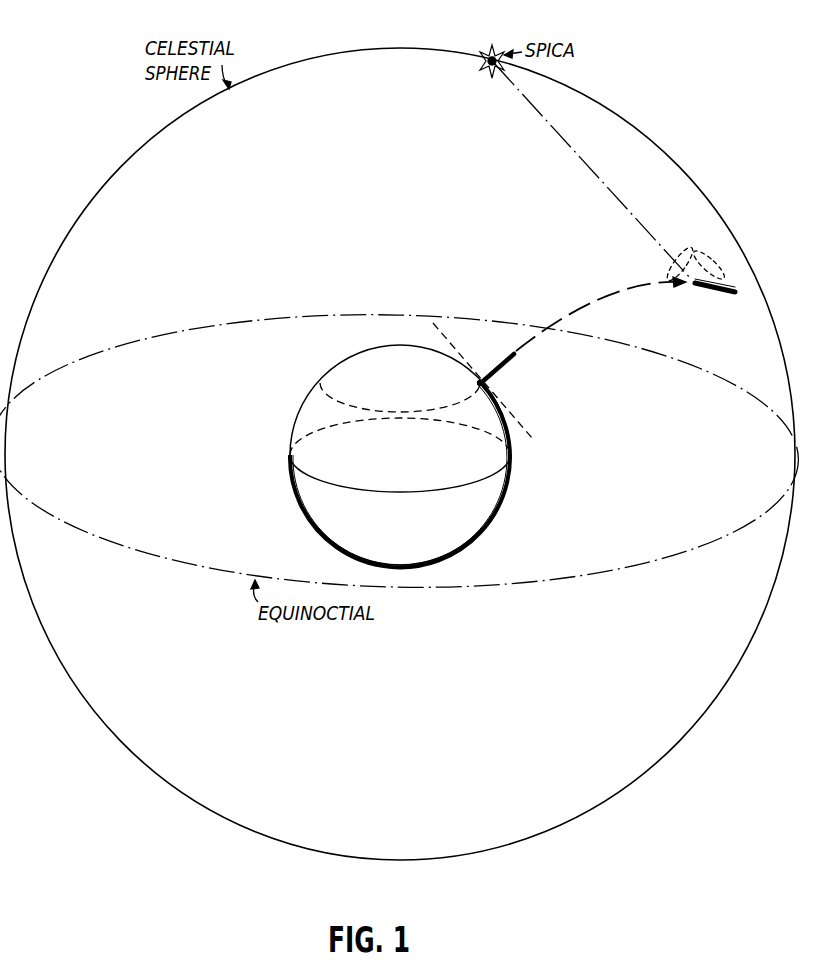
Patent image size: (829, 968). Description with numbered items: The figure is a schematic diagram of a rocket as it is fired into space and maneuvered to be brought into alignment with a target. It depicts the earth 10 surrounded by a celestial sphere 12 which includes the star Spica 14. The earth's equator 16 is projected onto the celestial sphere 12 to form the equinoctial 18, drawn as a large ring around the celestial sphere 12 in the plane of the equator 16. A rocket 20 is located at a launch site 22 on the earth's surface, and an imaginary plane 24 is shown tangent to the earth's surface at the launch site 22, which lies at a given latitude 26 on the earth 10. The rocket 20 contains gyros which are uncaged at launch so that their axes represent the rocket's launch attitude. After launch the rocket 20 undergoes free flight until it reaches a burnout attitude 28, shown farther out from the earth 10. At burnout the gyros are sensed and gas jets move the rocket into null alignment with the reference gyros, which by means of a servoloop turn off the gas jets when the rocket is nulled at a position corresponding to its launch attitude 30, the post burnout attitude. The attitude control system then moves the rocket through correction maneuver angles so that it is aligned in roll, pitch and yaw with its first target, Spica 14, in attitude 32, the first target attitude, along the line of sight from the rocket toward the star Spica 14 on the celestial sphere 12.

The earth 10 is at (291, 419).
The celestial sphere 12 is at (135, 152).
The star Spica 14 is at (488, 58).
The equator 16 is at (378, 470).
The equinoctial 18 is at (210, 538).
The rocket 20 is at (512, 366).
The launch site 22 is at (478, 384).
The imaginary plane 24 is at (445, 340).
The latitude 26 is at (357, 404).
The burnout attitude 28 is at (723, 293).
The launch attitude 30 is at (708, 266).
The first target attitude 32 is at (680, 248).